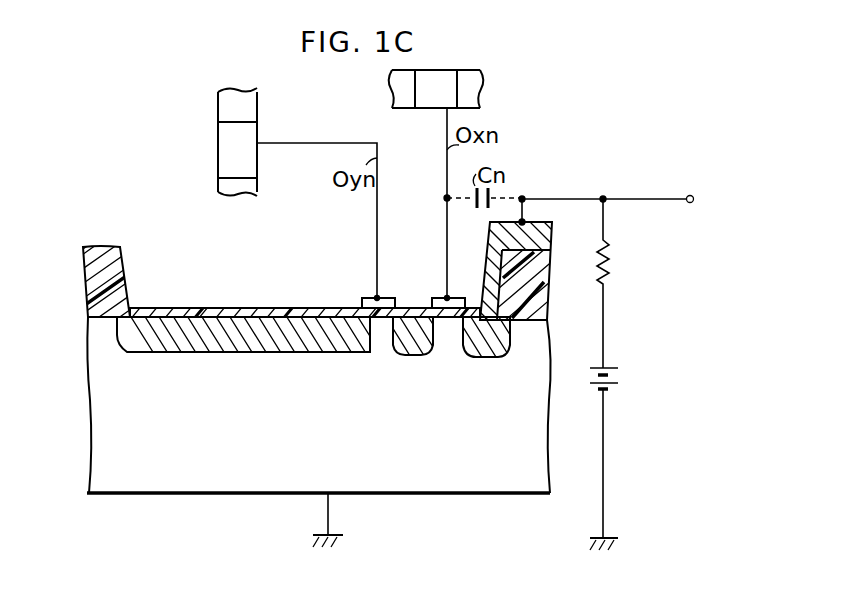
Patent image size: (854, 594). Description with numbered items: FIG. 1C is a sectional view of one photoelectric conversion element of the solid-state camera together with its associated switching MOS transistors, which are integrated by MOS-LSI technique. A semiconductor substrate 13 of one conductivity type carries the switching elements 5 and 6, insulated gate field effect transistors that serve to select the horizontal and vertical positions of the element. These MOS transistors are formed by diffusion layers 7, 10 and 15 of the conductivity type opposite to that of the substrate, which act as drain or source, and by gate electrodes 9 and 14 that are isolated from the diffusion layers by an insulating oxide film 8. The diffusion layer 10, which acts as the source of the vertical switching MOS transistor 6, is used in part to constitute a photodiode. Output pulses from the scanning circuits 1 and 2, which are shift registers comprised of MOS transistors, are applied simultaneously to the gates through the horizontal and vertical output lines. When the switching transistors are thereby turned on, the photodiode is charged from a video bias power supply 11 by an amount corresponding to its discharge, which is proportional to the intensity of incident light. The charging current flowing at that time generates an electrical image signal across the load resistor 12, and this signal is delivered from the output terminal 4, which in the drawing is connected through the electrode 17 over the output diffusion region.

The horizontal scanning circuit 1 is at (440, 70).
The vertical scanning circuit 2 is at (218, 149).
The output terminal 4 is at (666, 197).
The horizontal switching MOS transistor 5 is at (449, 346).
The vertical switching MOS transistor 6 is at (378, 346).
The diffusion layer 7 is at (492, 351).
The insulating oxide film 8 is at (93, 302).
The gate electrode 9 is at (446, 297).
The diffusion layer 10 is at (236, 346).
The video bias power supply 11 is at (620, 383).
The load resistor 12 is at (613, 272).
The semiconductor substrate 13 is at (487, 491).
The gate electrode 14 is at (370, 297).
The diffusion layer 15 is at (410, 356).
The output electrode 17 is at (561, 180).